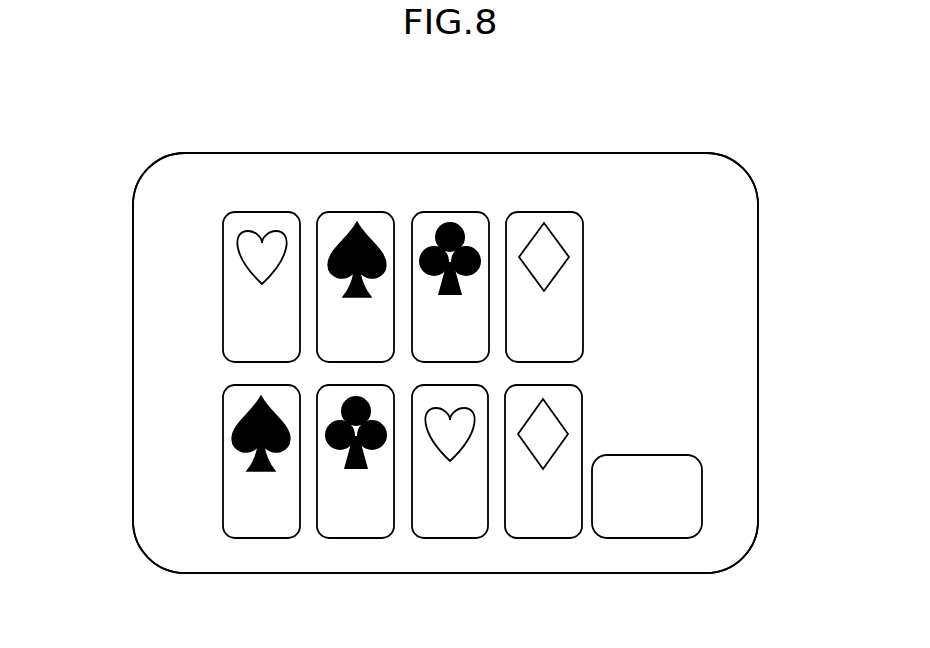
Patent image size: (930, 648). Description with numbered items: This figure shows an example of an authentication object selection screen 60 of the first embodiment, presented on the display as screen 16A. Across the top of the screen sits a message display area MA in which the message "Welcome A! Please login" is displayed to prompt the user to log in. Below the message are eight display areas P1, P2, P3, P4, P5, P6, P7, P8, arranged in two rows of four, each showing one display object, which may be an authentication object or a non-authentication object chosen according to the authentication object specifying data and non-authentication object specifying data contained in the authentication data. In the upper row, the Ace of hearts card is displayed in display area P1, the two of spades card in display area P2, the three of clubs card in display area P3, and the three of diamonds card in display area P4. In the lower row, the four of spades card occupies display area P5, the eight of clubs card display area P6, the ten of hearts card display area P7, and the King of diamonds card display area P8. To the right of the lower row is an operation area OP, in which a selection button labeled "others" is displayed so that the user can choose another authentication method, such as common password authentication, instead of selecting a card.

The authentication object selection screen 60 is at (213, 176).
The touch panel display 16A is at (562, 153).
The message display area MA is at (370, 175).
The display area P1 is at (223, 268).
The display area P2 is at (357, 362).
The display area P3 is at (448, 362).
The display area P4 is at (583, 262).
The display area P5 is at (260, 538).
The display area P6 is at (357, 538).
The display area P7 is at (448, 538).
The display area P8 is at (543, 538).
The operation area OP is at (647, 538).